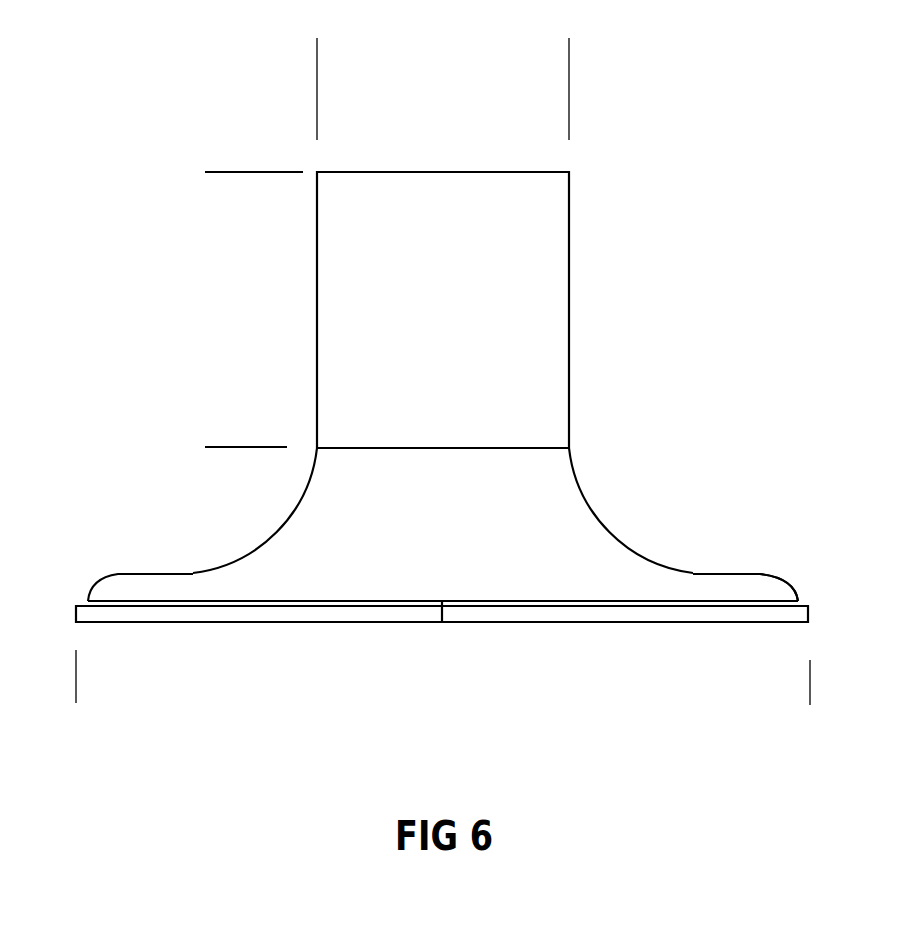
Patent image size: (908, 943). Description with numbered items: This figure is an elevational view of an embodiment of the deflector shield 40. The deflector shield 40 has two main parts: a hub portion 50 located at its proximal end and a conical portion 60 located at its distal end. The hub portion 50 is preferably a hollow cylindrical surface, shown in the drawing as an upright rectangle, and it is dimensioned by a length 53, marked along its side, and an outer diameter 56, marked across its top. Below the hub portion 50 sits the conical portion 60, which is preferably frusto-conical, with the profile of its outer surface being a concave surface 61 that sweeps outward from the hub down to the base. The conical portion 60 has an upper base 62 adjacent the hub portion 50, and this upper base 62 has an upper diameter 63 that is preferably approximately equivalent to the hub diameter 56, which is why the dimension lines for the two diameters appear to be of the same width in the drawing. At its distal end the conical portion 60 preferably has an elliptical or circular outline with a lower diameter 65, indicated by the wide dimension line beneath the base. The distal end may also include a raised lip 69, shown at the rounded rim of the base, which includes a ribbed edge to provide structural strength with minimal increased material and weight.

The deflector shield 40 is at (874, 311).
The hub portion 50 is at (544, 307).
The length 53 is at (241, 172).
The outer diameter 56 is at (569, 73).
The conical portion 60 is at (456, 519).
The concave surface 61 is at (176, 510).
The upper base 62 is at (517, 413).
The upper diameter 63 is at (569, 398).
The lower diameter 65 is at (810, 668).
The raised lip 69 is at (801, 544).